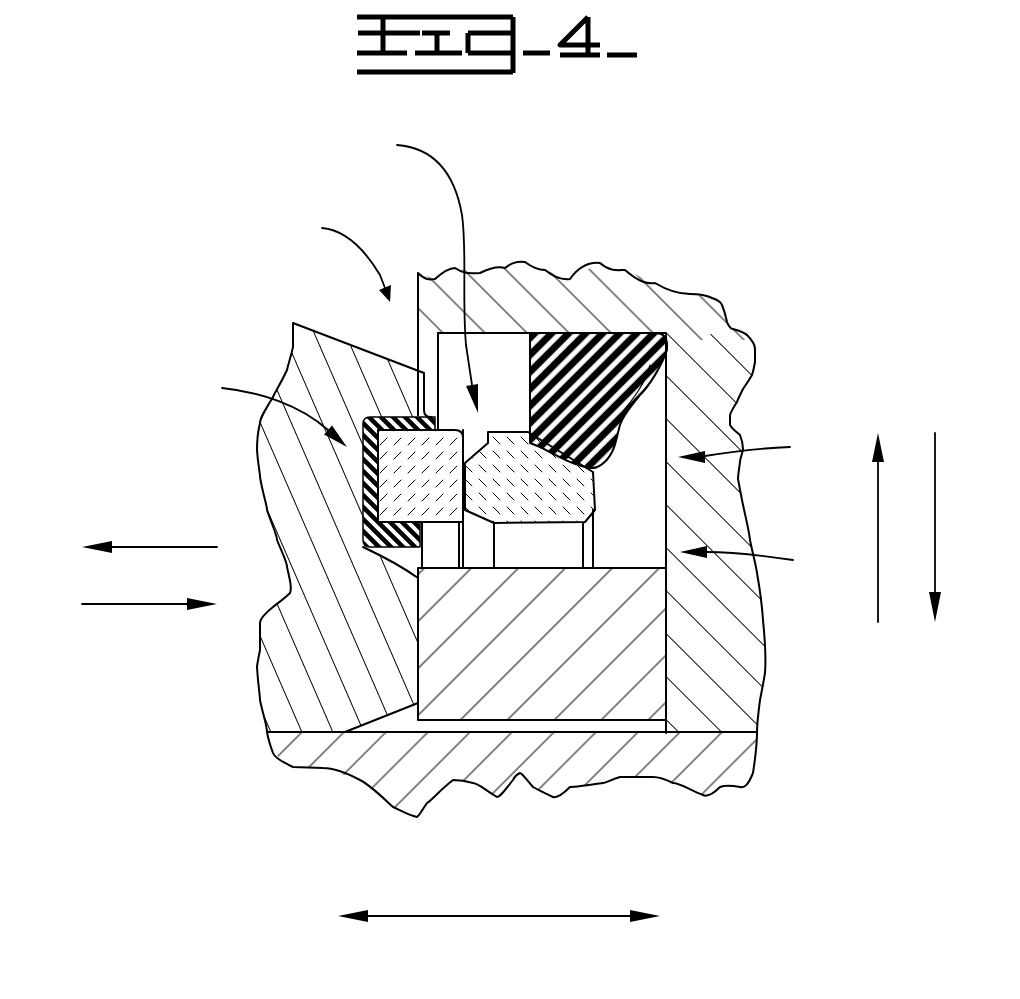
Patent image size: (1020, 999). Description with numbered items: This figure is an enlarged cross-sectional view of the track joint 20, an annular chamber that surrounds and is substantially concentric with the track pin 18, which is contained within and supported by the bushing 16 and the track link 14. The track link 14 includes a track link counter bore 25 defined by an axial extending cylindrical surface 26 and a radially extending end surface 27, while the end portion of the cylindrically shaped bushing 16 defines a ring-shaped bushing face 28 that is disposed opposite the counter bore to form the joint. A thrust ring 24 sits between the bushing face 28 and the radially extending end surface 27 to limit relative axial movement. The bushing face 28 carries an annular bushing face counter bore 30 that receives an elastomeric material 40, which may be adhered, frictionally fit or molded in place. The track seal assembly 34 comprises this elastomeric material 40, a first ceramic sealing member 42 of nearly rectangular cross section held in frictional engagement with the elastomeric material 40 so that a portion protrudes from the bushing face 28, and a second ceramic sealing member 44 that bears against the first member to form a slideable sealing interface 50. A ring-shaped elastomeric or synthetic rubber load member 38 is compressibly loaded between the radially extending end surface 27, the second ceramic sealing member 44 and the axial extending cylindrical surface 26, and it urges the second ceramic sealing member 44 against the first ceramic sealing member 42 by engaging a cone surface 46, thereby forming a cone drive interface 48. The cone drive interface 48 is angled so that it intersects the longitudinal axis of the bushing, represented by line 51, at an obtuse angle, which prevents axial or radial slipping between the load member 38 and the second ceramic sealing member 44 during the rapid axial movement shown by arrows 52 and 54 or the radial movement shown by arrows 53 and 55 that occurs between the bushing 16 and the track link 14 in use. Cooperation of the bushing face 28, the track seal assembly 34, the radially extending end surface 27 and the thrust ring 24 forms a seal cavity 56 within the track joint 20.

The track link 14 is at (657, 300).
The bushing 16 is at (325, 373).
The track pin 18 is at (742, 767).
The track joint 20 is at (336, 257).
The thrust ring 24 is at (603, 700).
The track link counter bore 25 is at (753, 446).
The axial extending cylindrical surface 26 is at (421, 273).
The radially extending end surface 27 is at (680, 380).
The bushing face 28 is at (426, 392).
The bushing face counter bore 30 is at (264, 410).
The track seal assembly 34 is at (443, 342).
The load member 38 is at (545, 352).
The elastomeric material 40 is at (418, 620).
The first ceramic sealing member 42 is at (415, 538).
The second ceramic sealing member 44 is at (563, 515).
The cone surface 46 is at (596, 368).
The cone drive interface 48 is at (605, 440).
The slideable sealing interface 50 is at (460, 482).
The line representing longitudinal axis 51 is at (510, 916).
The arrow illustrating axial movement 52 is at (152, 547).
The arrow illustrating radial movement 53 is at (878, 503).
The arrow illustrating axial movement 54 is at (132, 604).
The arrow illustrating radial movement 55 is at (935, 542).
The seal cavity 56 is at (755, 558).